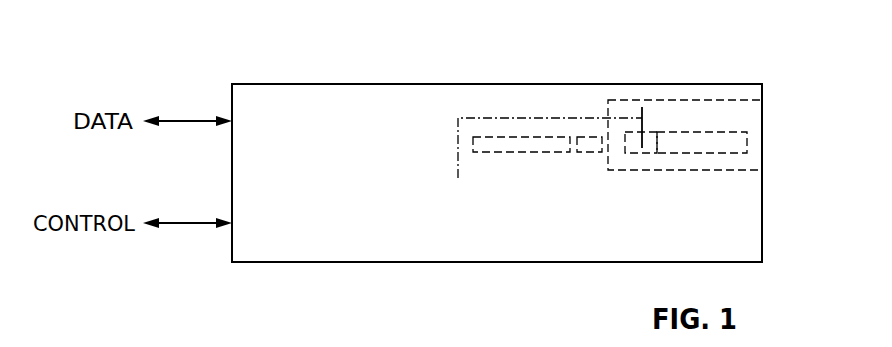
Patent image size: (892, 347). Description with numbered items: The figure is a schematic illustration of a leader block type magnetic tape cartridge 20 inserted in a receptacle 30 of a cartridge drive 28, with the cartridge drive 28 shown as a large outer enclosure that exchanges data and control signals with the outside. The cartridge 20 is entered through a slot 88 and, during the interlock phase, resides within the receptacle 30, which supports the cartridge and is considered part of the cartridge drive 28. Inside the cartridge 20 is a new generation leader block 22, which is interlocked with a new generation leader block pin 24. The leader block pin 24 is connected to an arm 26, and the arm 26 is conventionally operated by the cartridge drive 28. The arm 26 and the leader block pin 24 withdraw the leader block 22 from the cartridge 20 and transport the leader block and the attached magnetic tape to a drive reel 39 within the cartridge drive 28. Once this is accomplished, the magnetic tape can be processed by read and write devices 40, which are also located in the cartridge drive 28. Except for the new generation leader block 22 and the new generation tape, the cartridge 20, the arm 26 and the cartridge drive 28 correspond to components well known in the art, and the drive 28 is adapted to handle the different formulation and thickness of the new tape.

The slot 88 is at (763, 140).
The cartridge drive 28 is at (408, 84).
The arm 26 is at (527, 117).
The leader block pin 24 is at (646, 107).
The receptacle 30 is at (697, 170).
The leader block 22 is at (650, 148).
The magnetic tape cartridge 20 is at (737, 153).
The drive reel 39 is at (522, 153).
The read and write devices 40 is at (580, 153).